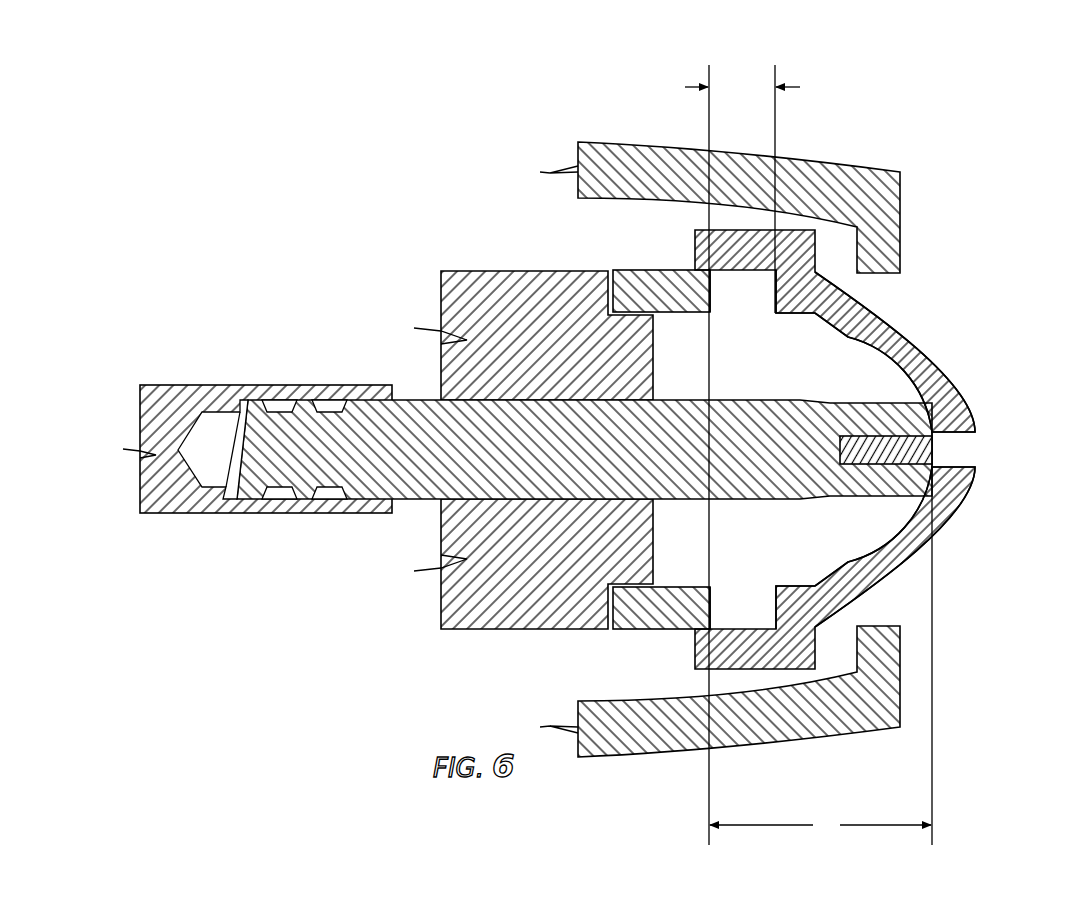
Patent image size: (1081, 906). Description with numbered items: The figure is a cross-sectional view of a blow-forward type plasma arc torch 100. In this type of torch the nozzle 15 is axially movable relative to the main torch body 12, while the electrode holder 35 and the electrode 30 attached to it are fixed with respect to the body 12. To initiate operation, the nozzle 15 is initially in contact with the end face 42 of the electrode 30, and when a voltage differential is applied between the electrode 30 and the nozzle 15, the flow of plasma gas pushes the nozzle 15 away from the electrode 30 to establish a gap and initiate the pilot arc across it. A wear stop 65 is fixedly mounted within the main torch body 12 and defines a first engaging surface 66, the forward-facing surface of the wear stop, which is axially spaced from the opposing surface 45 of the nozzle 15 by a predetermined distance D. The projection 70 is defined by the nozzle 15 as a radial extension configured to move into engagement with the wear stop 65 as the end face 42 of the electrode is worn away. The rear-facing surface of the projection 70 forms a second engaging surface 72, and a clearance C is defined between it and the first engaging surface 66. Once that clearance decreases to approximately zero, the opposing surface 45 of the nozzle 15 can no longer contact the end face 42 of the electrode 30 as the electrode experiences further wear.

The blow-forward type plasma arc torch 100 is at (1000, 209).
The main torch body 12 is at (470, 293).
The electrode 30 is at (690, 474).
The electrode holder 35 is at (178, 410).
The end face 42 is at (933, 422).
The opposing surface 45 is at (922, 497).
The wear stop 65 is at (641, 285).
The first engaging surface 66 is at (712, 292).
The projection 70 is at (790, 267).
The second engaging surface 72 is at (776, 297).
The nozzle 15 is at (937, 348).